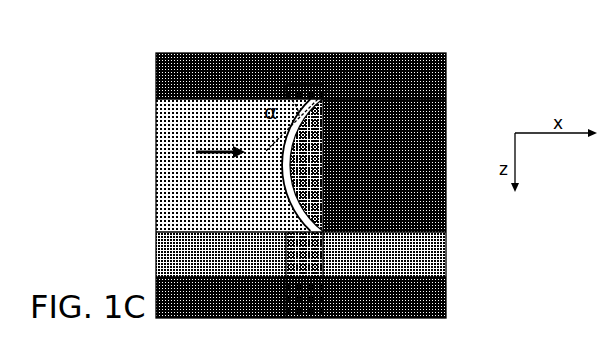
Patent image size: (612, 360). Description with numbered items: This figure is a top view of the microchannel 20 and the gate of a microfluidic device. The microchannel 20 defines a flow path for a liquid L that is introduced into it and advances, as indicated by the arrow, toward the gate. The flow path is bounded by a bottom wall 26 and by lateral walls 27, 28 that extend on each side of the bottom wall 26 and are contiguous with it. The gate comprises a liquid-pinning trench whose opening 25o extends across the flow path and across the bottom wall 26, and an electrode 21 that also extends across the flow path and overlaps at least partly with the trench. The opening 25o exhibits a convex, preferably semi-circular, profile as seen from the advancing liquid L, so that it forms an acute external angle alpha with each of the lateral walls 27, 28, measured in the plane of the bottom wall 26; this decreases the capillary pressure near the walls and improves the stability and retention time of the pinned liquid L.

The liquid L is at (202, 44).
The microchannel 20 is at (164, 178).
The electrode 21 is at (293, 313).
The opening of the trench 25o is at (279, 203).
The bottom wall 26 is at (438, 202).
The lateral wall 27 is at (440, 92).
The lateral wall 28 is at (148, 224).